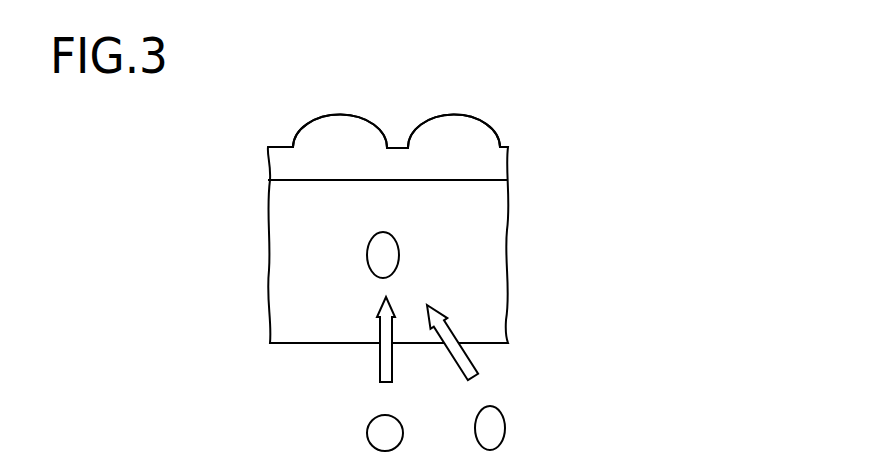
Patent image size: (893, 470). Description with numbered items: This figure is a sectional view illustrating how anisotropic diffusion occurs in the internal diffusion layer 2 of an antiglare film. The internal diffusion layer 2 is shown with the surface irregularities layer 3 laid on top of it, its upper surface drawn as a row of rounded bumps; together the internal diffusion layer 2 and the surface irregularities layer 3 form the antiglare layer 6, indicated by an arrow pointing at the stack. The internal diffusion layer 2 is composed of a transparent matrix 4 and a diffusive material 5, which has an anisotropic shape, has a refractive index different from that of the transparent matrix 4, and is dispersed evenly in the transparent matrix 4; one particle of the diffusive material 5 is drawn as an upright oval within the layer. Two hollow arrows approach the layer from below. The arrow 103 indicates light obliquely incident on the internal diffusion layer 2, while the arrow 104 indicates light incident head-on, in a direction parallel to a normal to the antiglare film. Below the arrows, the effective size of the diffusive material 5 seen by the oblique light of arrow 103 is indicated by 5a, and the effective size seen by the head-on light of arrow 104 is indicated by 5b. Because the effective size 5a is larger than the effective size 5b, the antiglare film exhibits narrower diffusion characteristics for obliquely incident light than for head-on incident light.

The internal diffusion layer 2 is at (172, 195).
The surface irregularities layer 3 is at (492, 163).
The transparent matrix 4 is at (282, 222).
The diffusive material 5 is at (378, 263).
The antiglare layer 6 is at (571, 212).
The arrow indicating obliquely incident light 103 is at (480, 343).
The arrow indicating head-on incident light 104 is at (360, 342).
The effective size for obliquely incident light 5a is at (492, 430).
The effective size for head-on incident light 5b is at (377, 428).